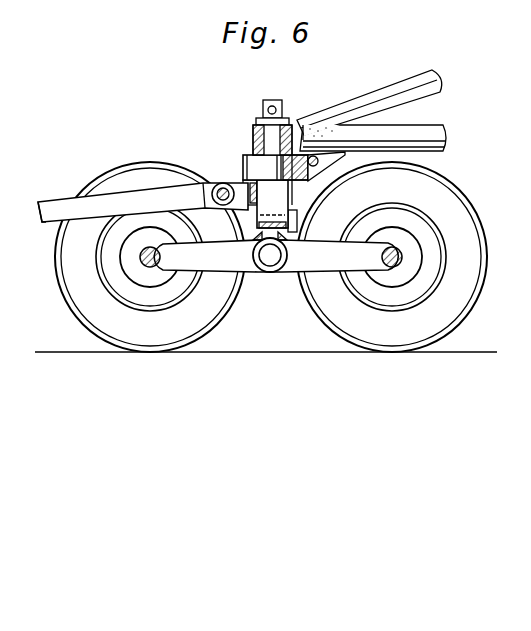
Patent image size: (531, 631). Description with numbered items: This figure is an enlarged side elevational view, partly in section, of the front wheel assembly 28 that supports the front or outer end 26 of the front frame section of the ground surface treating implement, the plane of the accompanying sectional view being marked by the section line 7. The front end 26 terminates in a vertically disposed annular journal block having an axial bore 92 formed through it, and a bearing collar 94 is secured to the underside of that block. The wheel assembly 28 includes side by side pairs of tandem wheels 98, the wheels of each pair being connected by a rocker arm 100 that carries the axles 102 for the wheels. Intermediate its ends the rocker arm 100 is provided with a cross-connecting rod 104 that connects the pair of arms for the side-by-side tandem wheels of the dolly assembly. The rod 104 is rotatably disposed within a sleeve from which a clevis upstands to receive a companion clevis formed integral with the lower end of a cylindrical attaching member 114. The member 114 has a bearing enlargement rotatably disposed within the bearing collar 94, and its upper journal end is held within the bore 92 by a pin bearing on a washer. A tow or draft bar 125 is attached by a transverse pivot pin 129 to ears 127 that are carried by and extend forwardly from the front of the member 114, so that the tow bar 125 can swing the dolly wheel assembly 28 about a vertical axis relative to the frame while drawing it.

The section line 7- 7 is at (237, 180).
The front or outer end of the front frame section 26 is at (319, 114).
The front wheel assembly 28 is at (452, 171).
The axial bore 92 is at (267, 128).
The bearing collar 94 is at (243, 154).
The tandem wheels 98 is at (463, 236).
The rocker arm 100 is at (300, 262).
The axles 102 is at (368, 244).
The cross-connecting rod 104 is at (301, 243).
The cylindrical attaching member 114 is at (279, 197).
The tow or draft bar 125 is at (40, 202).
The ears 127 is at (203, 177).
The transverse pivot pin 129 is at (212, 195).